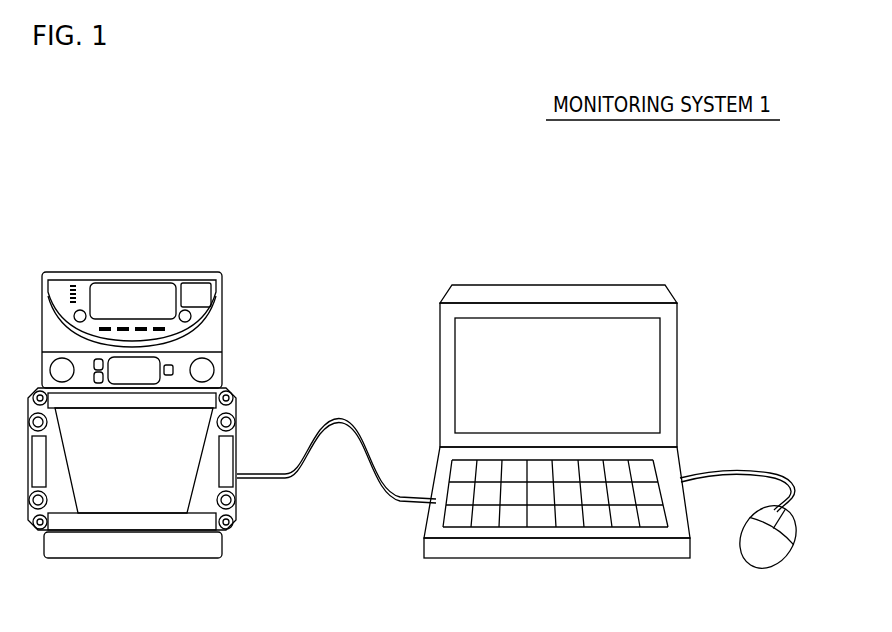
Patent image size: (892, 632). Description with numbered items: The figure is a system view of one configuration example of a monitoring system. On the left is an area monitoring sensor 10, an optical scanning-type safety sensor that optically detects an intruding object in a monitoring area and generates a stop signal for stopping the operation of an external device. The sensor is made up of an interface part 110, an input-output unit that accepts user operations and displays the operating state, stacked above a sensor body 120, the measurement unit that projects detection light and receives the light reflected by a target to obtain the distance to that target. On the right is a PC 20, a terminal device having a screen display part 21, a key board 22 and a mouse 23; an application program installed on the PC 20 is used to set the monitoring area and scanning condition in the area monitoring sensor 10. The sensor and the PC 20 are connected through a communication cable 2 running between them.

The communication cable 2 is at (363, 423).
The area monitoring sensor 10 is at (159, 387).
The interface part 110 is at (222, 323).
The sensor body 120 is at (236, 394).
The PC (personal computer) 20 is at (631, 432).
The screen display part 21 is at (660, 348).
The key board 22 is at (627, 483).
The mouse 23 is at (795, 519).